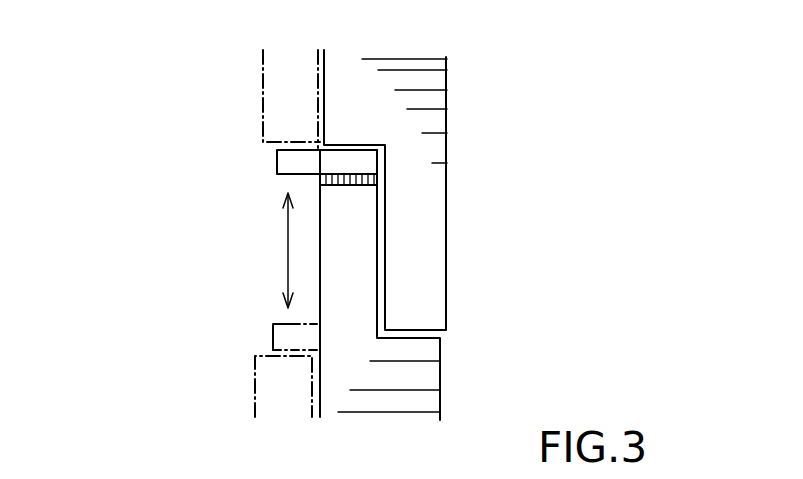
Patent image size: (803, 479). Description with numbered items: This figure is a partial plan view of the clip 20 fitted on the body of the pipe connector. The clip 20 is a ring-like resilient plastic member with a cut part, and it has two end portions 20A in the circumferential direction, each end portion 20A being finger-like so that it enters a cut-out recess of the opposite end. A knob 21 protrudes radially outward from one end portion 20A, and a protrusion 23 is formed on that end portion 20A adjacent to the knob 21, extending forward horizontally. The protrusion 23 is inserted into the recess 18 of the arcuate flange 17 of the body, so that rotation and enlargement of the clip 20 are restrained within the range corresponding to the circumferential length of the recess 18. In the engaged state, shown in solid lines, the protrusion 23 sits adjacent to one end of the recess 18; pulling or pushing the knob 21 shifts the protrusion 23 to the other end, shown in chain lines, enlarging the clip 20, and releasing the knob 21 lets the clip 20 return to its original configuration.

The flange 17 is at (277, 112).
The recess 18 is at (273, 252).
The clip 20 is at (443, 383).
The end portions 20A is at (335, 202).
The knob 21 is at (365, 167).
The protrusion 23 is at (277, 163).